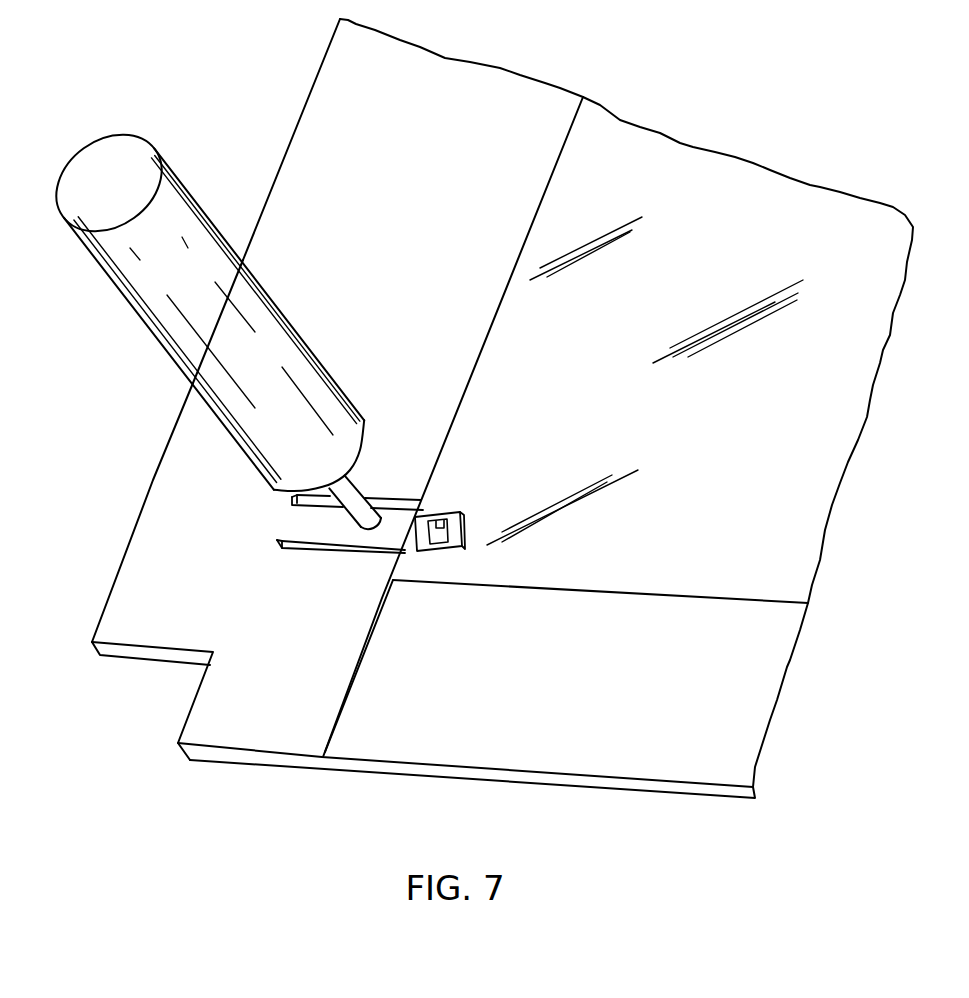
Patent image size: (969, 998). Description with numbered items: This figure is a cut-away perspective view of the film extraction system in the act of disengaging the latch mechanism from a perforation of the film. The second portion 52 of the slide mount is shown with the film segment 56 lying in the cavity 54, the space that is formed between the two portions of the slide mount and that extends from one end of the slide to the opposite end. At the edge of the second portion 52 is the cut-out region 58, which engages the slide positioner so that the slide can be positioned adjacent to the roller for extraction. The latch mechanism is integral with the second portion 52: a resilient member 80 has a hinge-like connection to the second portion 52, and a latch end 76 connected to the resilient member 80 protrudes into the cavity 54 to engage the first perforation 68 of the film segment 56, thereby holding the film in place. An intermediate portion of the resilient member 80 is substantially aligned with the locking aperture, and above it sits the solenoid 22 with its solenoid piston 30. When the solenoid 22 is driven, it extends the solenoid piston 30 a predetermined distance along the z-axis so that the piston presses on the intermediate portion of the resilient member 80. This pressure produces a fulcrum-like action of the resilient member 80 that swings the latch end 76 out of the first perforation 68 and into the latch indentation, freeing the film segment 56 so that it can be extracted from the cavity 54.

The solenoid 22 is at (189, 221).
The solenoid piston 30 is at (352, 488).
The second portion 52 is at (140, 538).
The cavity 54 is at (342, 760).
The film segment 56 is at (755, 582).
The cut-out region 58 is at (150, 662).
The first perforation 68 is at (437, 548).
The latch end 76 is at (438, 512).
The resilient member 80 is at (310, 522).